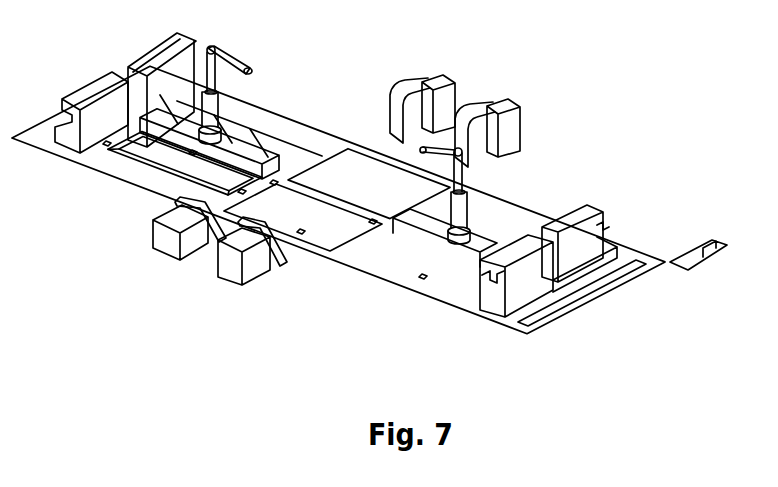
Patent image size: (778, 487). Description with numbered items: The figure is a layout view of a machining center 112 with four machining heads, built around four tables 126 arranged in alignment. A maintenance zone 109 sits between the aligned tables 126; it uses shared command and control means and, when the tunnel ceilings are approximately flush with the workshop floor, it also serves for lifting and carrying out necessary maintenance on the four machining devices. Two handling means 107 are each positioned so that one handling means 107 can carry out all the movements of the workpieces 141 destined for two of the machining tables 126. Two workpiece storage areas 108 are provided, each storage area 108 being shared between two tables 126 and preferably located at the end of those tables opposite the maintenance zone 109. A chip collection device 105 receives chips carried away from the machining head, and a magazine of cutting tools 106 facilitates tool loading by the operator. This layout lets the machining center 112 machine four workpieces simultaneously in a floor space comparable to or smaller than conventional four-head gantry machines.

The chip collection device 105 is at (507, 100).
The magazine of cutting tools 106 is at (98, 83).
The handling means 107 is at (233, 62).
The workpiece storage area 108 is at (606, 277).
The maintenance zone 109 is at (329, 241).
The machining center 112 is at (257, 370).
The table 126 is at (280, 143).
The workpiece 141 is at (170, 165).